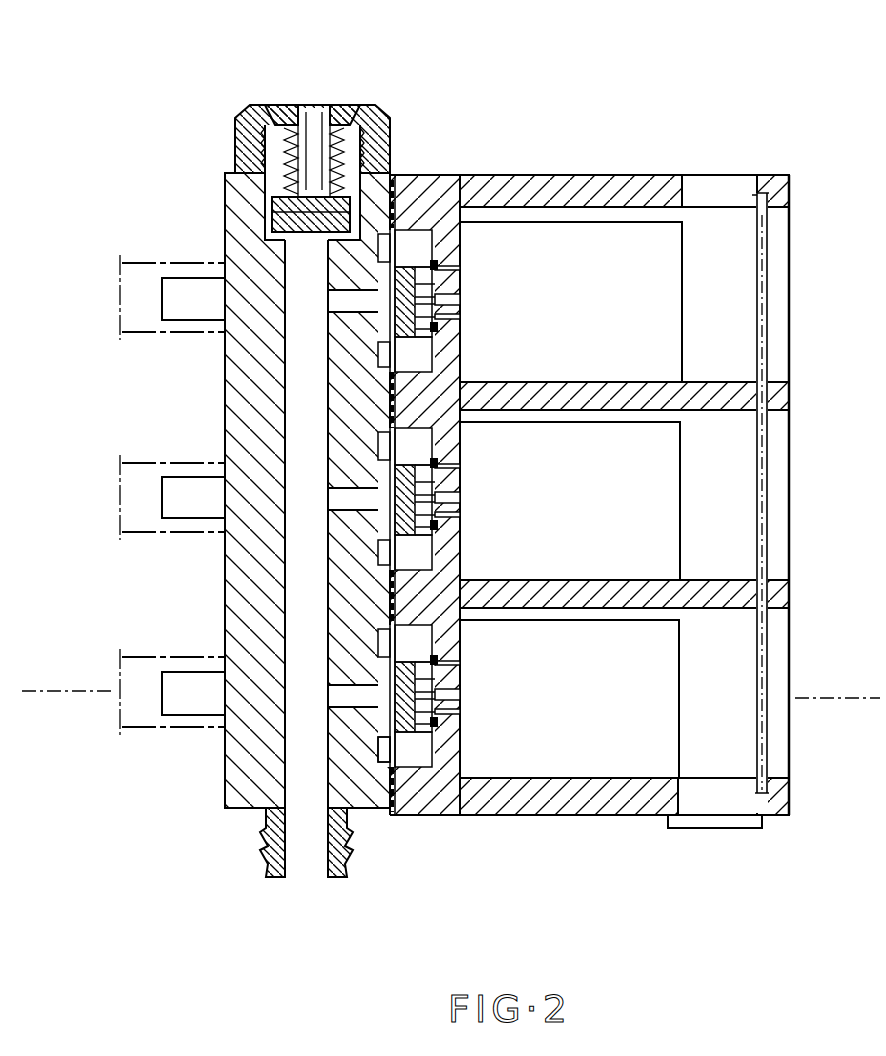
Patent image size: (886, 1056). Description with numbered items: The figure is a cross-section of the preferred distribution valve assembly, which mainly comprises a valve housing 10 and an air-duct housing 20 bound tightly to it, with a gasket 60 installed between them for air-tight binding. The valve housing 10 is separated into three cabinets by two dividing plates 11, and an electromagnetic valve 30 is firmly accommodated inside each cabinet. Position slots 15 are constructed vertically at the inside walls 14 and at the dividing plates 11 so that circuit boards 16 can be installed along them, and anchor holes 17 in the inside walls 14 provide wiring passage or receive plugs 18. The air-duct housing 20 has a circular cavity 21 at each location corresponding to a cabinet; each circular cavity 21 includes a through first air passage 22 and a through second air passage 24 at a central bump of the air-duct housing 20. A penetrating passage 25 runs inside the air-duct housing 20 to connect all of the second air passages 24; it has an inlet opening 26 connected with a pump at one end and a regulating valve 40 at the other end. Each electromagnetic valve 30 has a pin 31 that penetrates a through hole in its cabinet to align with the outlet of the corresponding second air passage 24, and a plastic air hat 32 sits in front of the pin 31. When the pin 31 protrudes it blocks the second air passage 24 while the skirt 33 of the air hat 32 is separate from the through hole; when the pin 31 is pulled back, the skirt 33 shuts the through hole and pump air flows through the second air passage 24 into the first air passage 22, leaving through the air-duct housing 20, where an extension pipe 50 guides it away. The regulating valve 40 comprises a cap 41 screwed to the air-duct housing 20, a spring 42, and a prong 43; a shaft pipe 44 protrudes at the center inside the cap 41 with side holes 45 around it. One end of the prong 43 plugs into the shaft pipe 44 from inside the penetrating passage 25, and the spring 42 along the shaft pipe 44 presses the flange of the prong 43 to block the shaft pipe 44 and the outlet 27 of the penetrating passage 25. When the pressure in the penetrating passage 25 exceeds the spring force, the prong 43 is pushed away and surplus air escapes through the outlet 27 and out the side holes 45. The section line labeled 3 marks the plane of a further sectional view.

The section line 3- 3 is at (33, 700).
The valve housing 10 is at (425, 195).
The dividing plate 11 is at (640, 390).
The inside wall 14 is at (555, 190).
The position slot 15 is at (790, 198).
The circuit board 16 is at (767, 652).
The anchor hole 17 is at (718, 195).
The plug 18 is at (717, 830).
The air-duct housing 20 is at (240, 238).
The circular cavity 21 is at (380, 442).
The first air passage 22 is at (190, 705).
The second air passage 24 is at (352, 700).
The penetrating passage 25 is at (300, 570).
The inlet opening 26 is at (300, 868).
The outlet 27 is at (307, 240).
The electromagnetic valve 30 is at (617, 245).
The pin 31 is at (440, 690).
The air hat 32 is at (405, 733).
The skirt 33 is at (438, 262).
The regulating valve 40 is at (235, 100).
The cap 41 is at (241, 147).
The spring 42 is at (282, 180).
The prong 43 is at (315, 160).
The shaft pipe 44 is at (350, 125).
The side hole 45 is at (268, 110).
The extension pipe 50 is at (120, 712).
The gasket 60 is at (398, 226).